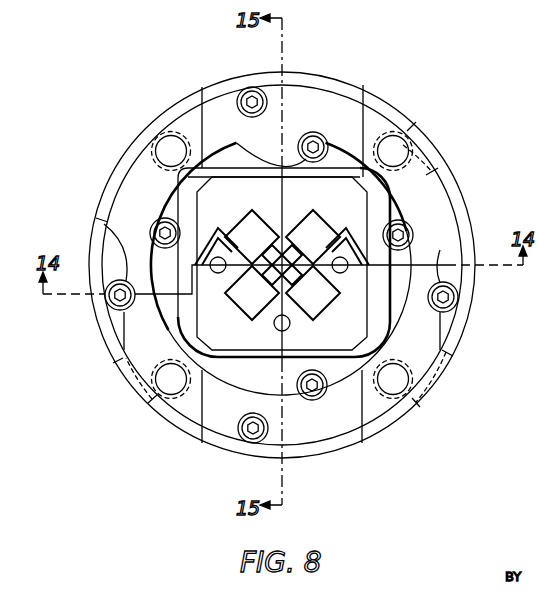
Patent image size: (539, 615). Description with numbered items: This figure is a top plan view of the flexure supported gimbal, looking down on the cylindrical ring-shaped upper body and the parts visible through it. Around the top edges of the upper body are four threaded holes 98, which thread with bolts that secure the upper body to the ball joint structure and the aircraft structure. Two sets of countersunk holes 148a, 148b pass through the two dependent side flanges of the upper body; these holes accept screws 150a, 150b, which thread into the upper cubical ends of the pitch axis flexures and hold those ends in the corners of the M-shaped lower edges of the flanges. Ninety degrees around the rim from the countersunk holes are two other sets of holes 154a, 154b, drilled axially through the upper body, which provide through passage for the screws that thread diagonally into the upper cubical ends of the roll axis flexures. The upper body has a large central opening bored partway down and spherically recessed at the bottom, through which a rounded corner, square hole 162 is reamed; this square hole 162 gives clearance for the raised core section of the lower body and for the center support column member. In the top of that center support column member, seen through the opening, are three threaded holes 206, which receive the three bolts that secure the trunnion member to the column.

The threaded holes 98 is at (155, 143).
The countersunk holes 148a is at (364, 98).
The countersunk holes 148b is at (313, 400).
The screws 150a is at (320, 135).
The screws 150b is at (250, 442).
The holes 154a is at (124, 281).
The holes 154b is at (447, 283).
The rounded corner, square hole 162 is at (185, 308).
The threaded holes 206 is at (332, 326).